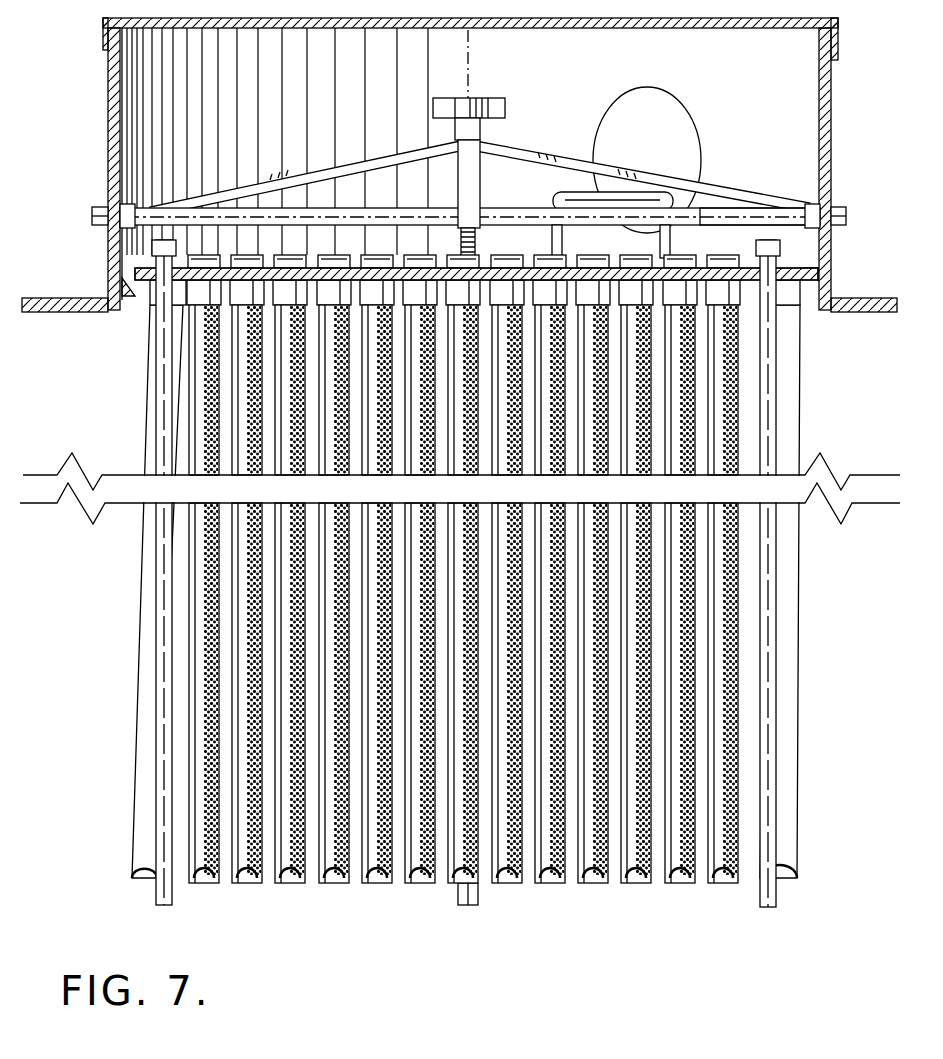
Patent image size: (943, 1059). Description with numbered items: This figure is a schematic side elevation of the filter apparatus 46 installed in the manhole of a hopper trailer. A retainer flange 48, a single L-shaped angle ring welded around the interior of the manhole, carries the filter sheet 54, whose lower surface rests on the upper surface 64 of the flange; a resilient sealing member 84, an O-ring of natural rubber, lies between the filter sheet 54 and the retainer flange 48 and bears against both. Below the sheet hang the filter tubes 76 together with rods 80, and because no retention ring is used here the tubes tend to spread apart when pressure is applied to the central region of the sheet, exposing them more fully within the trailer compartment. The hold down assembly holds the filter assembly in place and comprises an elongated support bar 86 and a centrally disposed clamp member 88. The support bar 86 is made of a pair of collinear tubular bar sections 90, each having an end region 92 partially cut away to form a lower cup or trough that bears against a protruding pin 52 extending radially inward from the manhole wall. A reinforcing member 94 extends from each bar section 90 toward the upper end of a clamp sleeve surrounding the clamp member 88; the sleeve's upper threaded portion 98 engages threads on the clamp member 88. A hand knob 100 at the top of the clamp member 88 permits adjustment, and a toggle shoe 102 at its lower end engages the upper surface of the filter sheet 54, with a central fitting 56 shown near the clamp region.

The filter apparatus 46 is at (783, 82).
The retainer flange 48 is at (118, 302).
The protruding pins 52 is at (96, 210).
The filter sheet 54 is at (800, 268).
The inlet fitting 56 is at (560, 192).
The upper surface of the retainer flange 64 is at (812, 274).
The filter tube 76 is at (683, 885).
The hanger rod 80 is at (172, 890).
The resilient sealing member 84 is at (116, 288).
The elongated support bar 86 is at (720, 212).
The clamp member 88 is at (478, 244).
The tubular bar sections 90 is at (385, 210).
The end region 92 is at (122, 206).
The reinforcing member 94 is at (318, 178).
The upper threaded portion 98 is at (482, 142).
The hand knob 100 is at (512, 88).
The toggle shoe 102 is at (464, 246).